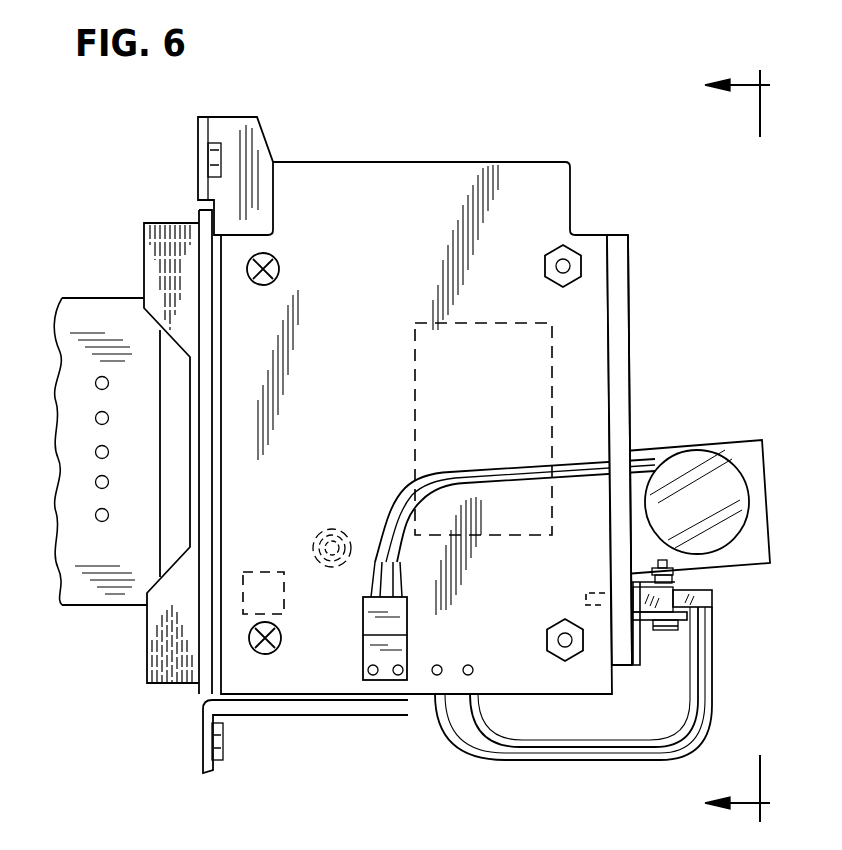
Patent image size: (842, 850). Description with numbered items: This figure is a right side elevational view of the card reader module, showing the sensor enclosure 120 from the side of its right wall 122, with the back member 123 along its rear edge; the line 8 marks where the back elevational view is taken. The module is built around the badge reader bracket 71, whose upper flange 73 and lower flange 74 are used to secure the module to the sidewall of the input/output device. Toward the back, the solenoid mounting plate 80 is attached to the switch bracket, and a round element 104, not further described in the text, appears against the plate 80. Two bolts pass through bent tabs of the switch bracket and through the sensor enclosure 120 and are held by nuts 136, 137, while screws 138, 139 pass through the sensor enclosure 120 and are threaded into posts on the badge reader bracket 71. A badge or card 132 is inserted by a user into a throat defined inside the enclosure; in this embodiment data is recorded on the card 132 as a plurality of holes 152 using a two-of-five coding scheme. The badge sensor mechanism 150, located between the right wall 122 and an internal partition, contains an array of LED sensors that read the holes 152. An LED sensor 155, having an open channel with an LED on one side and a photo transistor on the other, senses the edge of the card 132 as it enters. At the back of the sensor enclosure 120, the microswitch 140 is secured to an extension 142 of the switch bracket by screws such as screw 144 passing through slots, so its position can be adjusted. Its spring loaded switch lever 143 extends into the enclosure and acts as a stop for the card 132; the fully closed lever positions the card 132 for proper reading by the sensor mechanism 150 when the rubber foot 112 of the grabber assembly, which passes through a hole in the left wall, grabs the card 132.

The section line 8— 8 is at (728, 446).
The badge reader bracket 71 is at (265, 132).
The upper flange 73 is at (198, 137).
The lower flange 74 is at (208, 773).
The solenoid mounting plate 80 is at (742, 452).
The lamp / lens 104 is at (688, 463).
The rubber foot 112 is at (336, 527).
The sensor enclosure 120 is at (592, 231).
The right wall 122 is at (430, 173).
The back member 123 is at (629, 282).
The badge or card 132 is at (110, 300).
The nut 136 is at (548, 257).
The nut 137 is at (550, 630).
The screw 138 is at (278, 258).
The screw 139 is at (278, 650).
The microswitch 140 is at (700, 586).
The extension 142 is at (645, 618).
The switch lever 143 is at (590, 589).
The screw 144 is at (674, 628).
The badge sensor mechanism 150 is at (412, 362).
The holes 152 is at (113, 543).
The LED sensor 155 is at (272, 570).